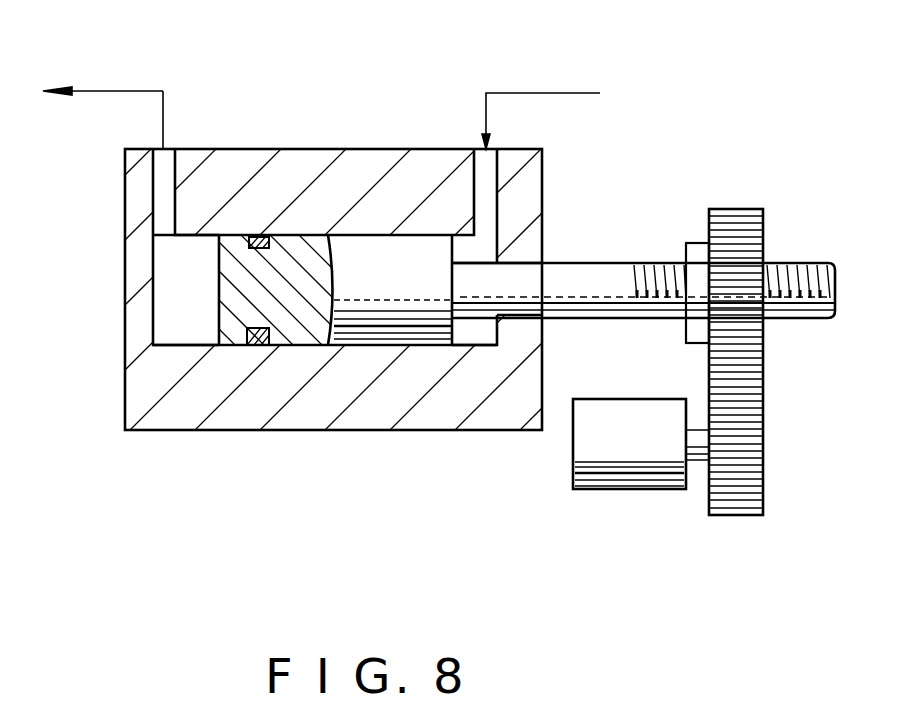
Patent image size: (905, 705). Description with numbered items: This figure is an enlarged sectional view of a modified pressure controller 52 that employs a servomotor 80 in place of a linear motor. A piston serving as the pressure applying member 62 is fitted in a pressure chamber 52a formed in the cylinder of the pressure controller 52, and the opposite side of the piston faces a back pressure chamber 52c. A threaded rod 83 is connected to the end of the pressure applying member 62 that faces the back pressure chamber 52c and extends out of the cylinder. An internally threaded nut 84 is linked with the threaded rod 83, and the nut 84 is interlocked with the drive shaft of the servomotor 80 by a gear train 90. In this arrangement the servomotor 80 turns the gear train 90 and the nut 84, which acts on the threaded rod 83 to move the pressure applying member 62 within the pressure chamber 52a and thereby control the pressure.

The pressure controller 52 is at (334, 135).
The pressure chamber 52a is at (182, 306).
The back pressure chamber 52c is at (467, 333).
The pressure applying member 62 is at (368, 358).
The threaded rod 83 is at (570, 278).
The internally threaded nut 84 is at (697, 247).
The servomotor 80 is at (632, 490).
The gear train 90 is at (769, 451).